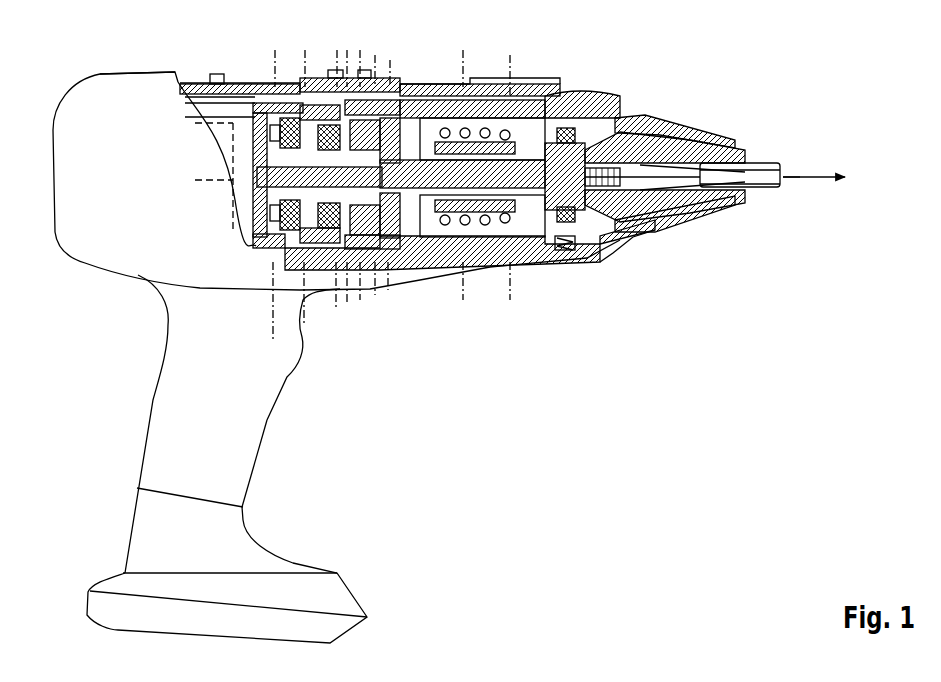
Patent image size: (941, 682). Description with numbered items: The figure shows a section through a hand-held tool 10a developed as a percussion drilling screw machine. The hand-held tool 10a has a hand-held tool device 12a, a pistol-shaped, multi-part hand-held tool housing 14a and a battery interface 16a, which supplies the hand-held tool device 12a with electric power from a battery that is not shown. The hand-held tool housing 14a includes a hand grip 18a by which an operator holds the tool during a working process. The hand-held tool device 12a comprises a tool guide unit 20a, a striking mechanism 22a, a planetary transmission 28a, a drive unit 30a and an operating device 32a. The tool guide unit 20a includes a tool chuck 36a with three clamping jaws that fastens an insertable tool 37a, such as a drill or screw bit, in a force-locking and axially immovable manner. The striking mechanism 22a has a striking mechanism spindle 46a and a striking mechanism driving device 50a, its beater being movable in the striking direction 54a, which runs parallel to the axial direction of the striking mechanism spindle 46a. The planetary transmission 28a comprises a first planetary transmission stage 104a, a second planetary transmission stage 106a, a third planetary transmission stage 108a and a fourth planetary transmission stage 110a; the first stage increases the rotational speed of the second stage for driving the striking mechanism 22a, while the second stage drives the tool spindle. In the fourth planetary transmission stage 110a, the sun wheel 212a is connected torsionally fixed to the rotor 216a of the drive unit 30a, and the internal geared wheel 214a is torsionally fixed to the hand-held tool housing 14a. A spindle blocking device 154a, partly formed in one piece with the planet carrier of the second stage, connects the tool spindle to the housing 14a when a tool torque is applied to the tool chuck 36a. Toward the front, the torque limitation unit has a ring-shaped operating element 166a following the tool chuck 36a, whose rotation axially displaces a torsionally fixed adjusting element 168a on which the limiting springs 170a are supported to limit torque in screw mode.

The hand-held tool 10a is at (463, 340).
The hand-held tool device 12a is at (451, 340).
The hand-held tool housing 14a is at (88, 107).
The battery interface 16a is at (302, 652).
The hand grip 18a is at (243, 428).
The tool guide unit 20a is at (802, 168).
The striking mechanism 22a is at (492, 289).
The planetary transmission 28a is at (418, 90).
The drive unit 30a is at (158, 66).
The operating device 32a is at (221, 49).
The tool chuck 36a is at (692, 253).
The insert tool / bit 37a is at (762, 185).
The striking mechanism spindle 46a is at (583, 210).
The striking mechanism driving device 50a is at (498, 142).
The striking direction 54a is at (805, 180).
The first planetary transmission stage 104a is at (393, 240).
The second planetary transmission stage 106a is at (330, 230).
The third planetary transmission stage 108a is at (298, 222).
The fourth planetary transmission stage 110a is at (268, 228).
The spindle blocking device 154a is at (362, 215).
The operating element 166a is at (612, 113).
The adjusting element 168a is at (585, 103).
The limiting springs 170a is at (567, 252).
The sun wheel 212a is at (270, 157).
The internal geared wheel 214a is at (268, 124).
The rotor 216a is at (268, 127).